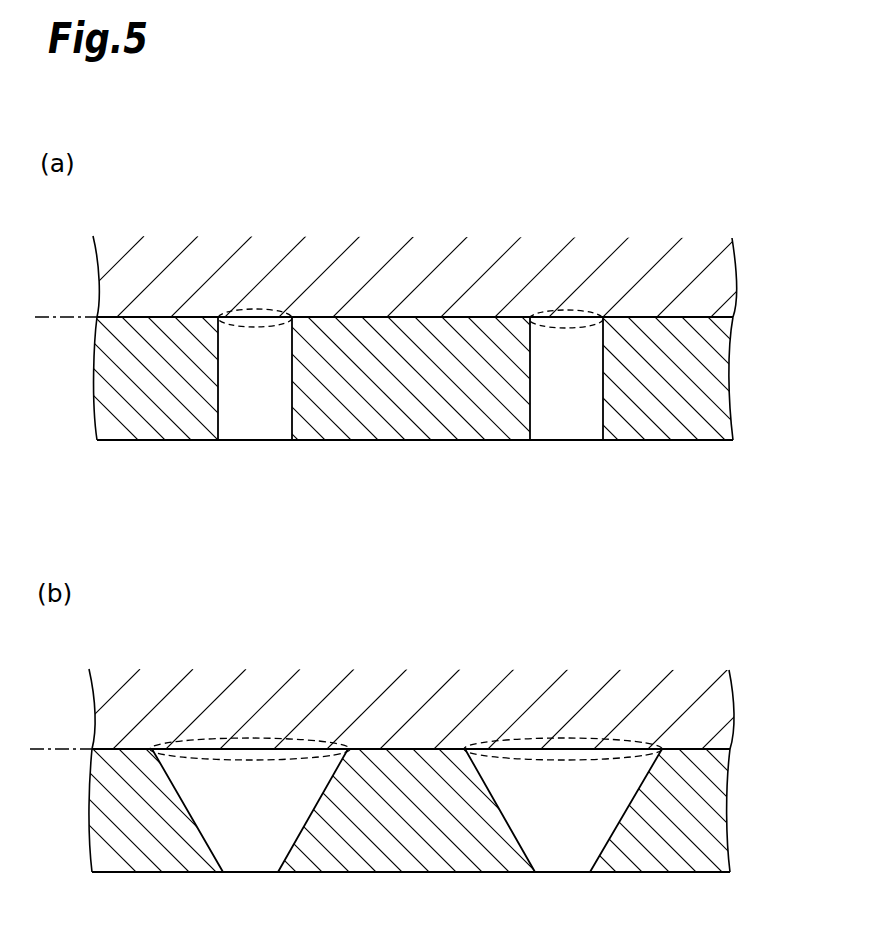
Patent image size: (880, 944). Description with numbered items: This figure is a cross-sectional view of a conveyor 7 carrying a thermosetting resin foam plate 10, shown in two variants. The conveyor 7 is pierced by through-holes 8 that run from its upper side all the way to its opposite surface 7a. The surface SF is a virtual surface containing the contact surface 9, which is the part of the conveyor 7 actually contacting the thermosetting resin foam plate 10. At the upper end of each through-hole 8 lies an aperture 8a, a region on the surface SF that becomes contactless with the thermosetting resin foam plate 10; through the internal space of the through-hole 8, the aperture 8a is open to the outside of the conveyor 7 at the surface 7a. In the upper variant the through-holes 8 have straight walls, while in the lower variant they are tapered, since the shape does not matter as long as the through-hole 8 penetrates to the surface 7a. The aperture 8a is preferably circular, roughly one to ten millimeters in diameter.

The conveyor 7 is at (720, 377).
The surface of the conveyor 7a is at (435, 440).
The through-hole 8 is at (218, 345).
The aperture 8a is at (262, 310).
The contact surface 9 is at (428, 317).
The thermosetting resin foam plate 10 is at (720, 282).
The surface SF is at (58, 315).